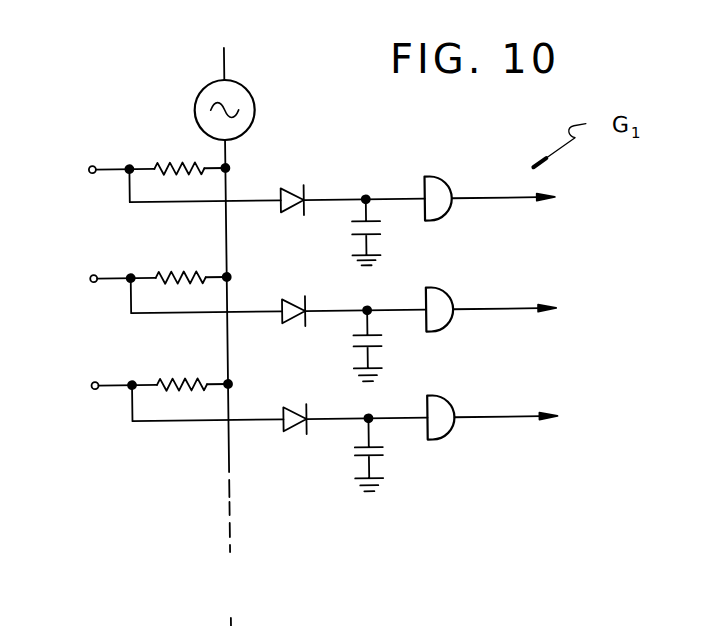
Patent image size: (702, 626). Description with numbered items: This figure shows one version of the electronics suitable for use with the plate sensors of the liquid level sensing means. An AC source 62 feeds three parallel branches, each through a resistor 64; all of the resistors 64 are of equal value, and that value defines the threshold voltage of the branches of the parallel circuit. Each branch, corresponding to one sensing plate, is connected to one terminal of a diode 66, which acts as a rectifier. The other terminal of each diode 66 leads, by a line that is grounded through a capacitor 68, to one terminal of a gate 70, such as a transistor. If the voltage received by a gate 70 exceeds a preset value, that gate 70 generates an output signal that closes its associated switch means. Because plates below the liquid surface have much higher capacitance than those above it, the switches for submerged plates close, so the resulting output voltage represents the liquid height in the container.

The AC source 62 is at (206, 92).
The resistor 64 is at (180, 165).
The diode 66 is at (279, 211).
The capacitor 68 is at (387, 229).
The gate 70 is at (448, 180).